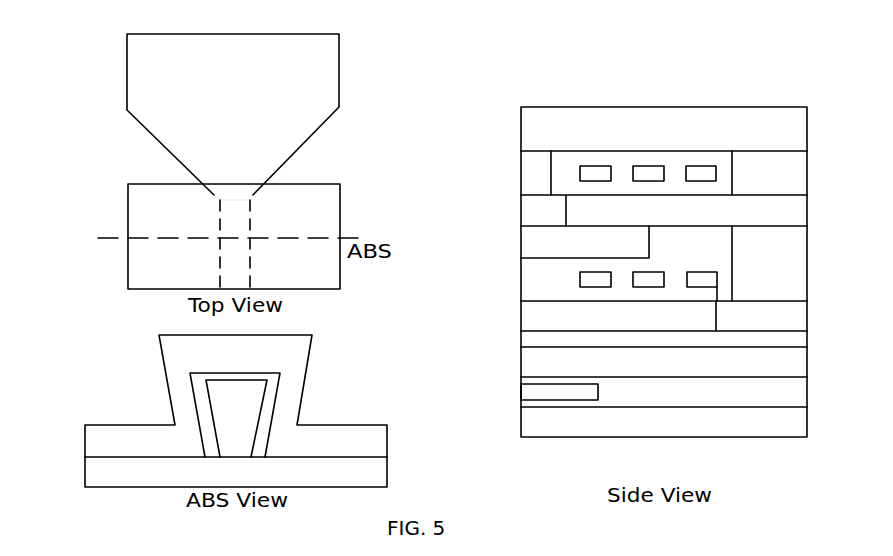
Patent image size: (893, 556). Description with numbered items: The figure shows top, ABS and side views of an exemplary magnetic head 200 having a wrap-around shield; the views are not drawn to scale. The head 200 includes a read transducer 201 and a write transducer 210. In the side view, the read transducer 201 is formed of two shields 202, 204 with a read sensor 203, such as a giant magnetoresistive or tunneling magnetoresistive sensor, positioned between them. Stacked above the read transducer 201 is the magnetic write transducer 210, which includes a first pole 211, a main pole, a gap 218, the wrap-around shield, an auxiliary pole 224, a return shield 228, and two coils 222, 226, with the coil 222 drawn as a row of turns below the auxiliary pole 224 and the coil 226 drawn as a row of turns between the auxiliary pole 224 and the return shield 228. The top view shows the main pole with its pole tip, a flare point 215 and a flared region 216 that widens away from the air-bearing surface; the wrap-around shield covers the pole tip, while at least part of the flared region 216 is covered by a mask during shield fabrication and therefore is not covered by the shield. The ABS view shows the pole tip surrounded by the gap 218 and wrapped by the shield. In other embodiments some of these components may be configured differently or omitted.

The magnetic head 200 is at (70, 30).
The read transducer 201 is at (468, 413).
The shield 202 is at (535, 438).
The read sensor 203 is at (522, 392).
The shield 204 is at (522, 362).
The write transducer 210 is at (487, 227).
The first pole 211 is at (522, 318).
The flare point 215 is at (200, 200).
The flared region 216 is at (340, 152).
The gap 218 is at (197, 422).
The coil 222 is at (717, 301).
The auxiliary pole 224 is at (737, 195).
The coil 226 is at (580, 177).
The return shield 228 is at (643, 106).